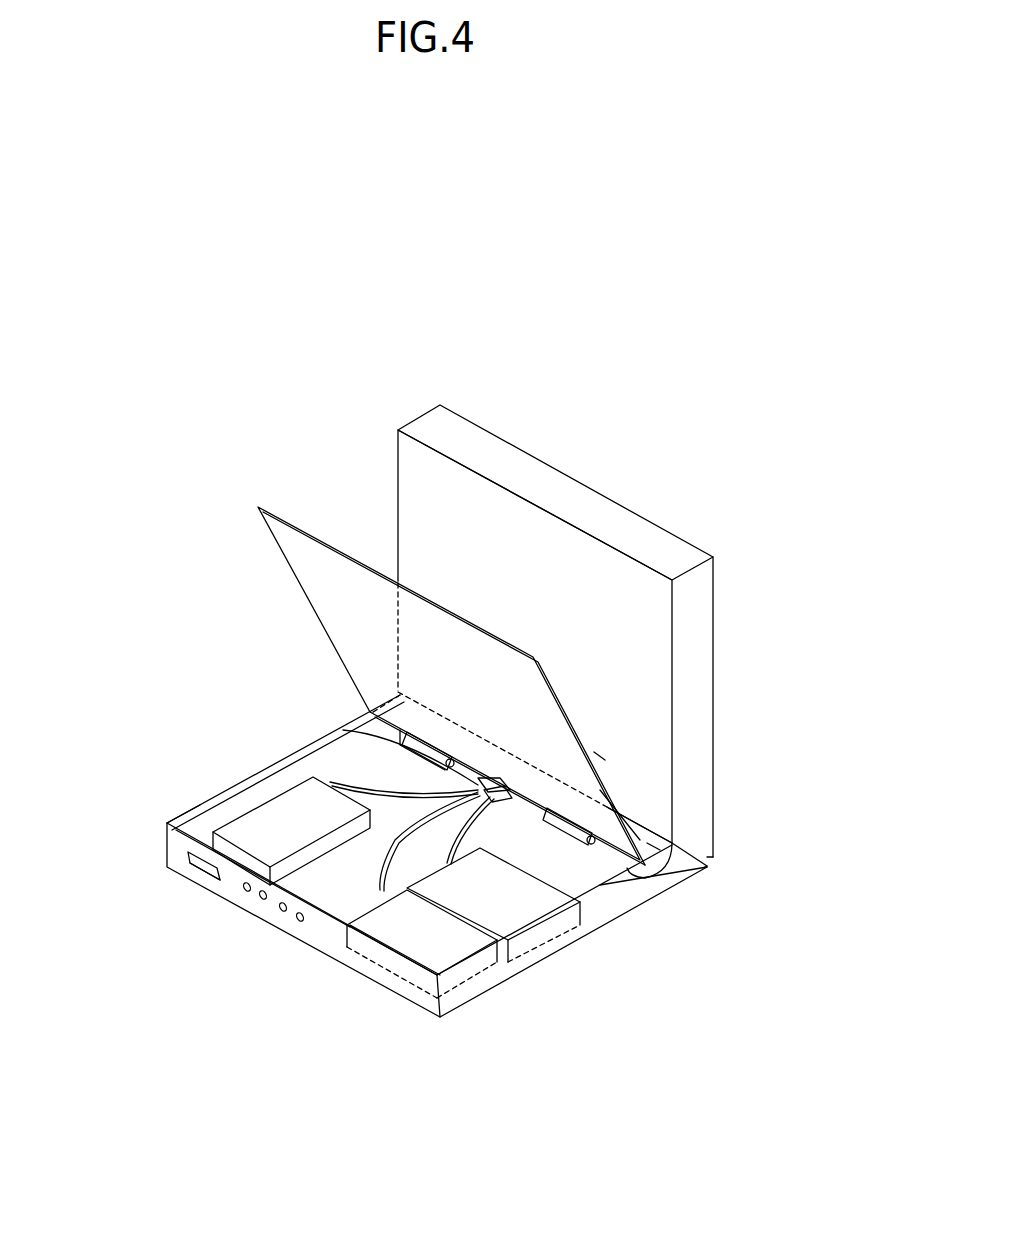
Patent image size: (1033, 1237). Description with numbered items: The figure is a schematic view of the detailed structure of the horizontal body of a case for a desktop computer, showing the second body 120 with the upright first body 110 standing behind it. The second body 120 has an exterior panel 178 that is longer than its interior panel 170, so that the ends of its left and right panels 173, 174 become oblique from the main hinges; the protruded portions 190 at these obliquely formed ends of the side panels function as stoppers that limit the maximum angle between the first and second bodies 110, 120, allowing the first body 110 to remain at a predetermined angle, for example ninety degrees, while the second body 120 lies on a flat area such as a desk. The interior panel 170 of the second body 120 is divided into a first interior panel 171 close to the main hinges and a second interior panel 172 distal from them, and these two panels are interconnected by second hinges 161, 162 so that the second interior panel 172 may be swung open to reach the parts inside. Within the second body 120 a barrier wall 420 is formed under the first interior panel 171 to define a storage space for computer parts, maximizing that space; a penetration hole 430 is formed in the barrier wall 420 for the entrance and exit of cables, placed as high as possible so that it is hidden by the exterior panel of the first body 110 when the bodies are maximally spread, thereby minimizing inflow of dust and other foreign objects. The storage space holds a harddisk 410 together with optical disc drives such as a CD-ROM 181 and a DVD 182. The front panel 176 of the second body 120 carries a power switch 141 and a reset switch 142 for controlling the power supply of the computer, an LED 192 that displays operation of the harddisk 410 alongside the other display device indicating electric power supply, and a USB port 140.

The first body 110 is at (629, 631).
The second body 120 is at (440, 863).
The USB port 140 is at (197, 876).
The power switch 141 is at (283, 912).
The reset switch 142 is at (300, 922).
The second hinge 161 is at (434, 757).
The second hinge 162 is at (564, 808).
The interior panel 170 is at (645, 684).
The first interior panel 171 is at (647, 843).
The second interior panel 172 is at (597, 753).
The left panel 173 is at (175, 814).
The right panel 174 is at (673, 878).
The front panel 176 is at (168, 866).
The exterior panel 178 is at (410, 990).
The CD-ROM 181 is at (487, 973).
The DVD 182 is at (552, 938).
The protruded portion 190 is at (708, 853).
The LED 192 is at (247, 892).
The harddisk 410 is at (276, 794).
The barrier wall 420 is at (680, 843).
The penetration hole 430 is at (334, 736).